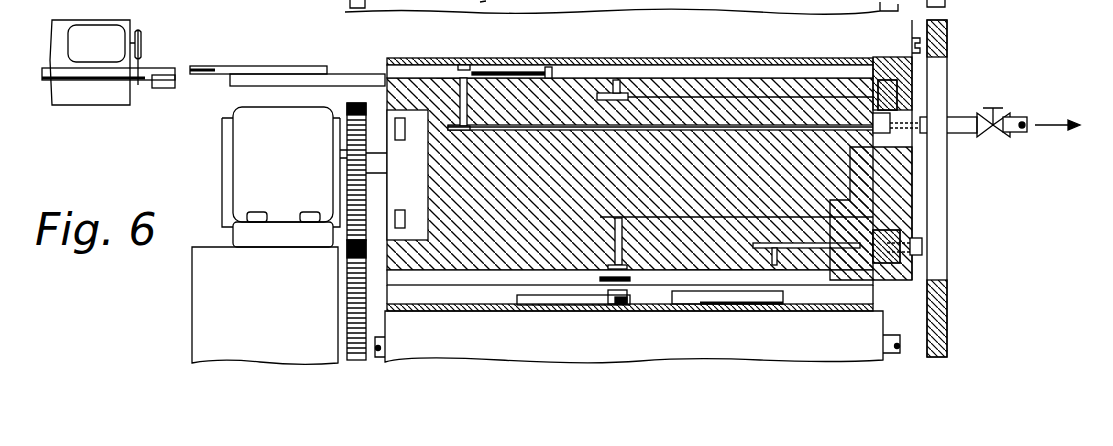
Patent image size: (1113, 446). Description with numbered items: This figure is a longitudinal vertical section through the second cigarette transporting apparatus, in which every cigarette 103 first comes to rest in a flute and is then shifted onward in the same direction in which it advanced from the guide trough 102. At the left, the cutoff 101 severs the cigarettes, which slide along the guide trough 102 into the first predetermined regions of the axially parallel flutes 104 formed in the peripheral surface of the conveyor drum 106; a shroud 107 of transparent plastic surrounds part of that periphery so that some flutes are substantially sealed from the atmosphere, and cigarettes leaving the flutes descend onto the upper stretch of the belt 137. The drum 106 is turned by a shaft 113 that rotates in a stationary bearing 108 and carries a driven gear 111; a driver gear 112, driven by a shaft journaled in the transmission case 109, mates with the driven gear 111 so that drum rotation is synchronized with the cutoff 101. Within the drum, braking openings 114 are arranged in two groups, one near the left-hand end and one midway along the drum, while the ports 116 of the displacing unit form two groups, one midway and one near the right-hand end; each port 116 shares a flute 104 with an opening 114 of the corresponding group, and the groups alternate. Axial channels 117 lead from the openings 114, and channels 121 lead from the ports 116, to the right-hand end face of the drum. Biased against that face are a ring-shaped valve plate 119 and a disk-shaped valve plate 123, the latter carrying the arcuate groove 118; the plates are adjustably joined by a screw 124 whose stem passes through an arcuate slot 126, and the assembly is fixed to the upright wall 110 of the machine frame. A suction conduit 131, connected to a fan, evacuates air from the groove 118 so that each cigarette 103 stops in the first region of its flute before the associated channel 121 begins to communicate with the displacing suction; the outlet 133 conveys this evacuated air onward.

The cutoff 101 is at (75, 42).
The guide trough 102 is at (165, 88).
The cigarette 103 is at (155, 70).
The flute 104 is at (385, 72).
The drum 106 is at (445, 258).
The shroud 107 is at (748, 60).
The stationary bearing 108 is at (245, 176).
The transmission case 109 is at (215, 270).
The upright wall 110 is at (940, 328).
The driven gear 111 is at (352, 110).
The driver gear 112 is at (352, 335).
The shaft 113 is at (385, 172).
The opening 114 is at (465, 78).
The port 116 is at (615, 80).
The channel 117 is at (517, 127).
The arcuate groove 118 is at (883, 133).
The valve plate 119 is at (882, 80).
The channel 121 is at (666, 97).
The valve plate 123 is at (902, 87).
The screw 124 is at (922, 252).
The arcuate slot 126 is at (900, 243).
The suction conduit 131 is at (948, 125).
The valve outlet 133 is at (1015, 116).
The belt 137 is at (472, 311).